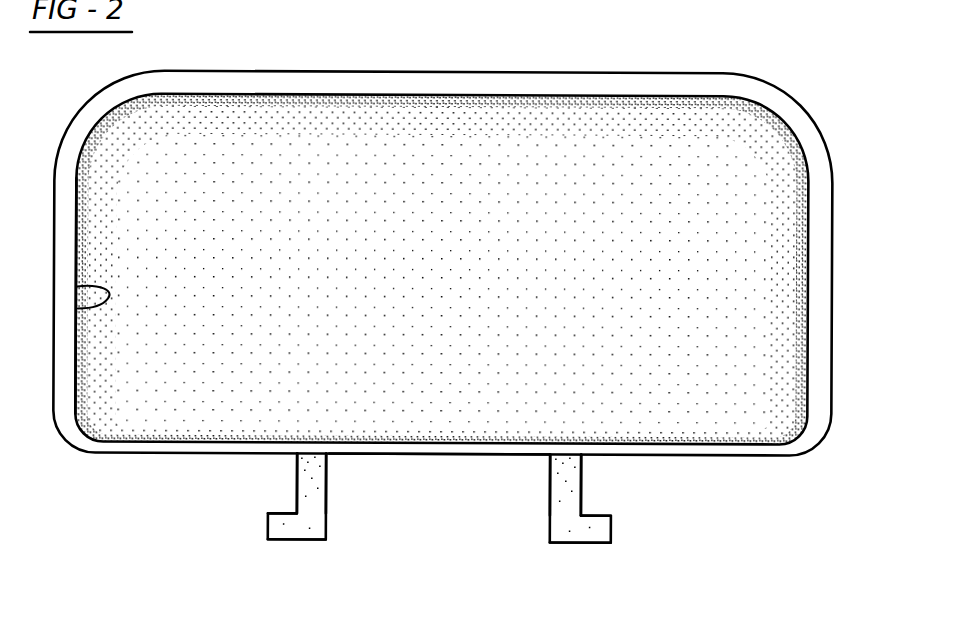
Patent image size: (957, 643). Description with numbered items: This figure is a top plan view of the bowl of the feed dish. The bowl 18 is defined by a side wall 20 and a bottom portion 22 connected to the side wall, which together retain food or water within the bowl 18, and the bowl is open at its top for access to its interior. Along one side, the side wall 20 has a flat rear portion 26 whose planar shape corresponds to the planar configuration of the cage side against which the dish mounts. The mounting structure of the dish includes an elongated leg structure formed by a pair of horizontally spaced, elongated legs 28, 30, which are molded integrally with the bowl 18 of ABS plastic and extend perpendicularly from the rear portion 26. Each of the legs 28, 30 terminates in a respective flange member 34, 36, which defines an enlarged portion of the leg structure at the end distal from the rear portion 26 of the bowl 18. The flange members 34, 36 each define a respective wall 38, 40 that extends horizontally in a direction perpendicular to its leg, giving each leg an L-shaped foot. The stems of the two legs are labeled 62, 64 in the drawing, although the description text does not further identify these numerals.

The bowl 18 is at (572, 73).
The side wall 20 is at (78, 312).
The bottom portion 22 is at (407, 133).
The flat rear portion 26 is at (434, 456).
The elongated leg 28 is at (322, 513).
The elongated leg 30 is at (563, 499).
The flange member 34 is at (283, 541).
The flange member 36 is at (597, 537).
The wall 38 is at (285, 513).
The wall 40 is at (594, 514).
The first stem 62 is at (298, 472).
The second stem 64 is at (583, 463).